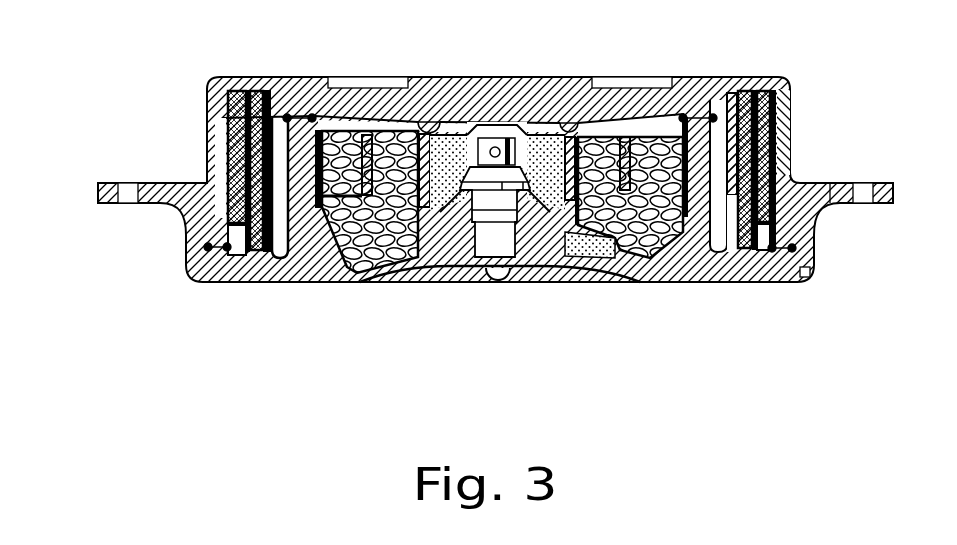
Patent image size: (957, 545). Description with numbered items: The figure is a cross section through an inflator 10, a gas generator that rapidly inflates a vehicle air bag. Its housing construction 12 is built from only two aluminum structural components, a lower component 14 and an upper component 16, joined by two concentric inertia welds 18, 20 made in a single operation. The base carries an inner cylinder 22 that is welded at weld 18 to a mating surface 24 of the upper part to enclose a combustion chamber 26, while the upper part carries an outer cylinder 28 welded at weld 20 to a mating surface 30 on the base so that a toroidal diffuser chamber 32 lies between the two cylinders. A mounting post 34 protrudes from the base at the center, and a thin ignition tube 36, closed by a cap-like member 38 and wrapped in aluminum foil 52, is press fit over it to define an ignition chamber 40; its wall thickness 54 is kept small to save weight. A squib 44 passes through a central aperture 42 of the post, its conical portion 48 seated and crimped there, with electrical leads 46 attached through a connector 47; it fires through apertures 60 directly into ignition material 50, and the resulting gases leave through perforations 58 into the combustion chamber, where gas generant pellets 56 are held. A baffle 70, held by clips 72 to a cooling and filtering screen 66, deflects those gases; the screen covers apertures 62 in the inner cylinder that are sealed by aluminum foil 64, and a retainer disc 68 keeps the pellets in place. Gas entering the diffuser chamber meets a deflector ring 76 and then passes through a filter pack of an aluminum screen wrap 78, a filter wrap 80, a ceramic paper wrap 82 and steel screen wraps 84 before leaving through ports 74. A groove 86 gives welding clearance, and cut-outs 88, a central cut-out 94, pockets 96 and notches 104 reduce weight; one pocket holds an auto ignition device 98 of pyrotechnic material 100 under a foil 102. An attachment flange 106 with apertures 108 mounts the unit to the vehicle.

The inflator 10 is at (803, 73).
The housing construction 12 is at (810, 163).
The lower component 14 is at (750, 258).
The upper component 16 is at (684, 88).
The inertia weld 18 is at (690, 116).
The inertia weld 20 is at (796, 243).
The inner cylinder 22 is at (745, 270).
The mating surface 24 is at (312, 115).
The combustion chamber 26 is at (612, 262).
The outer cylinder 28 is at (222, 147).
The mating surface 30 is at (207, 232).
The diffuser chamber 32 is at (768, 270).
The mounting post 34 is at (452, 243).
The ignition tube 36 is at (444, 135).
The cap-like member 38 is at (461, 135).
The ignition chamber 40 is at (533, 148).
The central aperture 42 is at (470, 220).
The squib 44 is at (516, 200).
The electrical leads 46 is at (497, 272).
The connector 47 is at (467, 245).
The conical portion 48 is at (470, 208).
The ignition material 50 is at (552, 138).
The aluminum foil 52 is at (597, 137).
The thickness 54 is at (472, 197).
The pellets 56 is at (668, 243).
The perforations 58 is at (560, 197).
The apertures 60 is at (496, 147).
The apertures 62 is at (292, 166).
The aluminum foil 64 is at (714, 262).
The cooling and filtering screen 66 is at (316, 120).
The retainer disc 68 is at (650, 137).
The baffle 70 is at (367, 135).
The clips 72 is at (320, 240).
The ports 74 is at (212, 108).
The deflector ring 76 is at (288, 115).
The wrap of aluminum screen 78 is at (265, 92).
The wrap of filter material 80 is at (253, 90).
The wrap of ceramic paper 82 is at (240, 92).
The wraps of stainless steel screen 84 is at (235, 258).
The circumferential groove 86 is at (428, 137).
The cut-outs 88 is at (394, 88).
The cut-out 94 is at (542, 275).
The cut-out pockets 96 is at (350, 270).
The auto ignition device 98 is at (640, 258).
The pyrotechnic material 100 is at (652, 243).
The foil 102 is at (612, 252).
The notches 104 is at (811, 272).
The attachment flange 106 is at (895, 189).
The apertures 108 is at (858, 189).